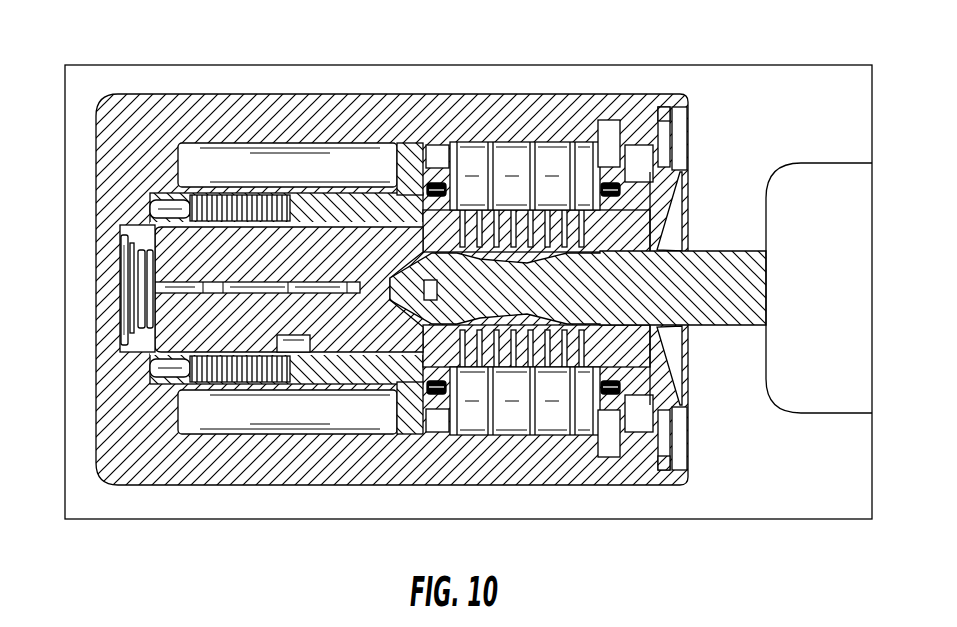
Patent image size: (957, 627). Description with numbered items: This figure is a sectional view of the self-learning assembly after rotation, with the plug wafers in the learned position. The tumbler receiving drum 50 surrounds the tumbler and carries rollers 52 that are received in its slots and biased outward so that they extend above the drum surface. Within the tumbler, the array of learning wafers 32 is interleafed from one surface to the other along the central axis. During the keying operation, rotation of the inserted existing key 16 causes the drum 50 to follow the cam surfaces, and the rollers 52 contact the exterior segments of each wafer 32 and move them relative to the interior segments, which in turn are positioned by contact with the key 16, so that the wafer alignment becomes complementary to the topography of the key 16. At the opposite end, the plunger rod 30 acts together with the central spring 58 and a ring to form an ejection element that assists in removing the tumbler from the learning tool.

The existing key 16 is at (834, 297).
The plunger rod 30 is at (152, 272).
The learning wafer 32 is at (552, 220).
The tumbler receiving drum 50 is at (268, 184).
The roller 52 is at (553, 162).
The central spring 58 is at (125, 303).